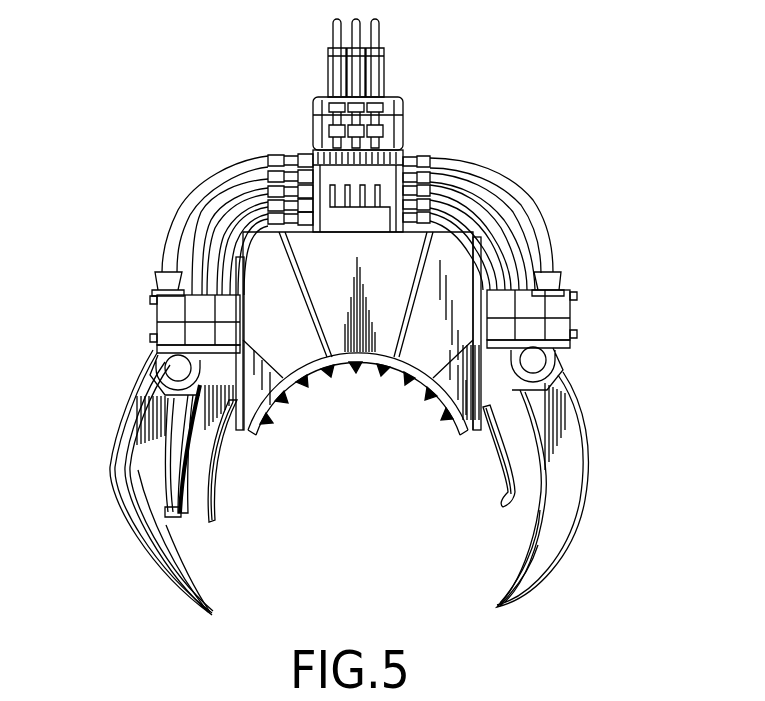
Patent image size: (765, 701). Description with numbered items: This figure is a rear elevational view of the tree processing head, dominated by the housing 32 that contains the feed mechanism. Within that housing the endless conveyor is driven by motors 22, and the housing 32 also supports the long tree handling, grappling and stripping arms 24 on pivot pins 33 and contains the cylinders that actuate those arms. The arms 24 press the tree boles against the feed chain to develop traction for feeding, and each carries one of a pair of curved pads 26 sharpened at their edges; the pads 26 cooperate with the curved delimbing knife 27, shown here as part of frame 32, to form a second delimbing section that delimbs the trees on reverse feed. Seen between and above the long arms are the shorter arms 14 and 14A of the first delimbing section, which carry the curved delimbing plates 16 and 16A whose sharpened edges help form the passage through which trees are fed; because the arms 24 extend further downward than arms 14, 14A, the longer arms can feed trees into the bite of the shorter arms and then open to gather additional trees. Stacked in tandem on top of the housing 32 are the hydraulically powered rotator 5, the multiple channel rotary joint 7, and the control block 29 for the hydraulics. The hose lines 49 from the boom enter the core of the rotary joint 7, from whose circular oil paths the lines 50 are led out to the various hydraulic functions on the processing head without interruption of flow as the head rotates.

The hose lines 49 is at (374, 28).
The rotator 5 is at (408, 100).
The rotary joint 7 is at (385, 163).
The control block 29 is at (378, 212).
The lines 50 is at (547, 222).
The housing 32 is at (445, 288).
The motors 22 is at (157, 318).
The pivot pins 33 is at (175, 368).
The delimbing knife 27 is at (443, 410).
The arms 24 is at (150, 515).
The pads 26 is at (178, 553).
The arm 14A is at (212, 452).
The delimbing plate 16A is at (217, 493).
The arm 14 is at (505, 430).
The delimbing plate 16 is at (497, 485).